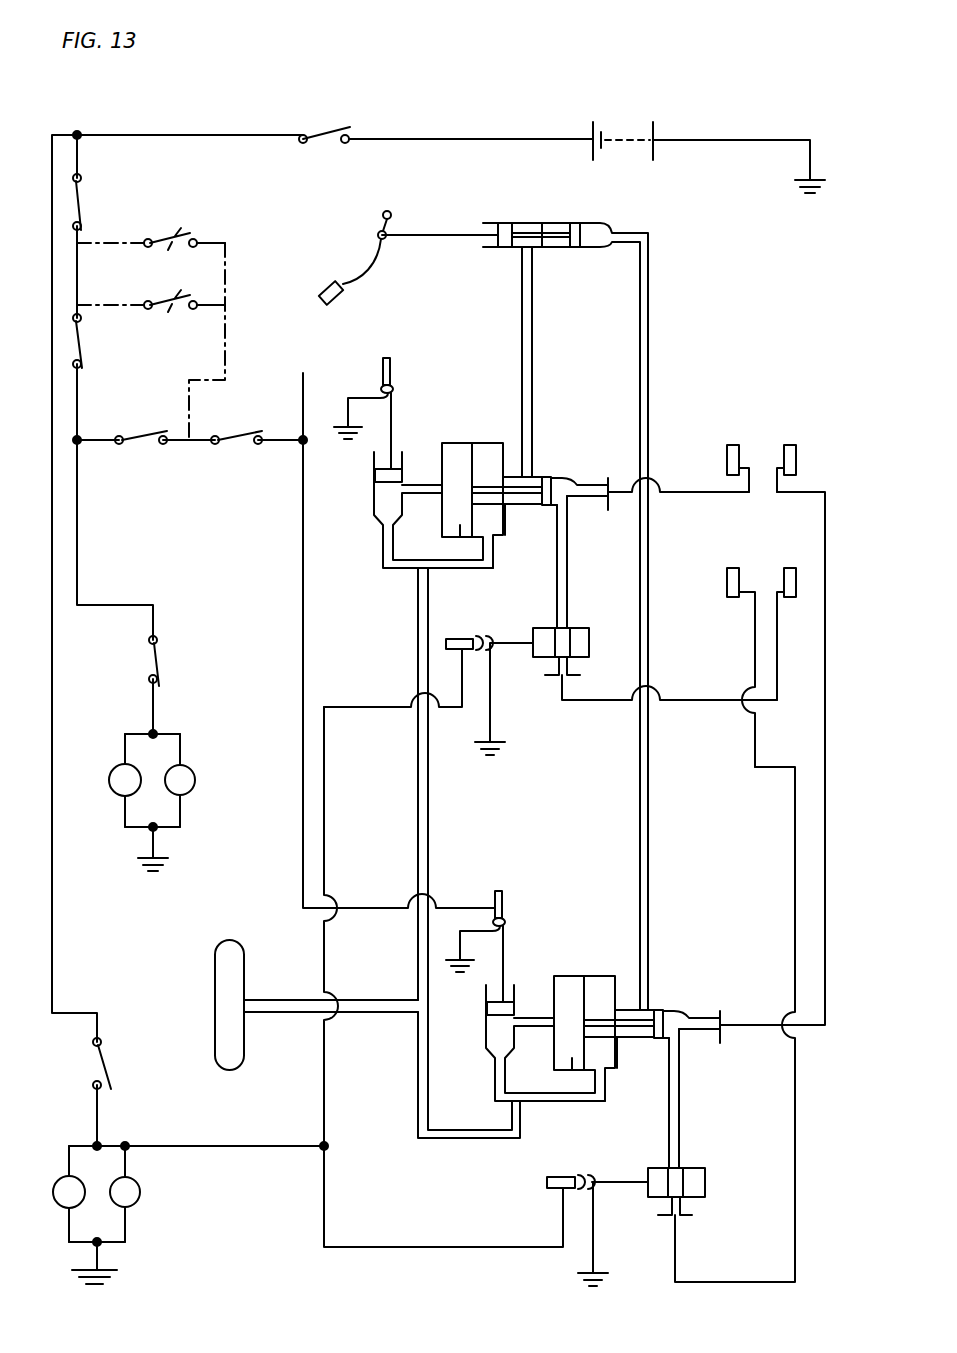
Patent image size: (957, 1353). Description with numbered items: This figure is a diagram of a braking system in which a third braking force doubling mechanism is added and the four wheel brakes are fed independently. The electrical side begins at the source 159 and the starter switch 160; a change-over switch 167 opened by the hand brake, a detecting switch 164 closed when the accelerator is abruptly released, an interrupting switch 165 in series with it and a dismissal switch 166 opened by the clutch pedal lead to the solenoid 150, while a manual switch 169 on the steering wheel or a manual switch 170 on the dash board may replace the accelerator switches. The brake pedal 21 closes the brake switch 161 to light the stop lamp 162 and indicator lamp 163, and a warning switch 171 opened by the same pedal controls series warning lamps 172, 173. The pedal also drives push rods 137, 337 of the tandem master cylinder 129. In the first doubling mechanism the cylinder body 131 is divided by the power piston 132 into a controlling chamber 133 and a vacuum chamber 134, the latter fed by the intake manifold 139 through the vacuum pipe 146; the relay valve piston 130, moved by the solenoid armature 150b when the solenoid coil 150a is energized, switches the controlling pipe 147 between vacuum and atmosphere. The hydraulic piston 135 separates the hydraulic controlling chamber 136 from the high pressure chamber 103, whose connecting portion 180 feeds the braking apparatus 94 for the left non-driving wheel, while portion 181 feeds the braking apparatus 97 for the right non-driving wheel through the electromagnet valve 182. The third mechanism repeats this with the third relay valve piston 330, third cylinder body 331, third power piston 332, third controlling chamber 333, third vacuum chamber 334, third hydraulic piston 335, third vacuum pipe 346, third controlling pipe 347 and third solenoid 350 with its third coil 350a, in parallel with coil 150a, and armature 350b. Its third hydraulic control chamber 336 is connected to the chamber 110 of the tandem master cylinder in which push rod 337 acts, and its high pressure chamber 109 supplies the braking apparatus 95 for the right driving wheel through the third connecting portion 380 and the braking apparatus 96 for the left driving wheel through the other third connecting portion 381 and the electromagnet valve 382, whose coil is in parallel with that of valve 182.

The brake pedal 21 is at (325, 280).
The braking apparatus for left-hand side non-driving wheel 94 is at (749, 493).
The braking apparatus for right-hand side driving wheel 95 is at (777, 493).
The braking apparatus for left-hand side driving wheel 96 is at (752, 600).
The braking apparatus for right-hand side non-driving wheel 97 is at (780, 603).
The high pressure chamber 103 is at (583, 482).
The third high pressure chamber 109 is at (704, 1009).
The chamber of the tandem master cylinder 110 is at (602, 230).
The tandem master cylinder 129 is at (519, 243).
The relay valve piston 130 is at (378, 486).
The cylinder body 131 is at (453, 483).
The power piston 132 is at (462, 528).
The controlling chamber 133 is at (455, 444).
The vacuum chamber 134 is at (490, 444).
The hydraulic piston 135 is at (548, 477).
The hydraulic controlling chamber 136 is at (523, 505).
The push rod 137 is at (488, 241).
The intake manifold 139 is at (214, 972).
The vacuum pipe 146 is at (496, 560).
The controlling pipe 147 is at (416, 500).
The solenoid 150 is at (405, 399).
The solenoid coil 150a is at (393, 388).
The solenoid armature 150b is at (392, 362).
The source 159 is at (626, 140).
The switch for the starter circuit 160 is at (324, 124).
The brake switch 161 is at (92, 1062).
The stop lamp 162 is at (62, 1208).
The indicator lamp 163 is at (129, 1208).
The detecting switch 164 is at (100, 341).
The interrupting switch 165 is at (140, 448).
The dismissal switch 166 is at (235, 448).
The change-over switch 167 is at (100, 202).
The manual switch on the steering wheel 169 is at (151, 255).
The manual switch on the dash board 170 is at (151, 317).
The warning switch 171 is at (136, 661).
The warning lamp 172 is at (116, 796).
The warning lamp 173 is at (182, 796).
The connecting portion 180 is at (594, 498).
The portion of the high pressure chamber 181 is at (570, 562).
The electromagnet valve 182 is at (515, 628).
The third relay valve piston 330 is at (475, 1025).
The third cylinder body 331 is at (568, 1015).
The third power piston 332 is at (553, 1075).
The third controlling chamber 333 is at (566, 999).
The third vacuum chamber 334 is at (610, 983).
The third hydraulic piston 335 is at (677, 999).
The third hydraulic control chamber 336 is at (641, 1057).
The push rod 337 is at (582, 250).
The third vacuum pipe 346 is at (628, 1099).
The third controlling pipe 347 is at (550, 1059).
The third solenoid 350 is at (518, 932).
The third coil 350a is at (542, 912).
The third solenoid armature 350b is at (543, 896).
The third connecting portion 380 is at (705, 1099).
The third connecting portion 381 is at (714, 1098).
The electromagnet valve 382 is at (623, 1163).